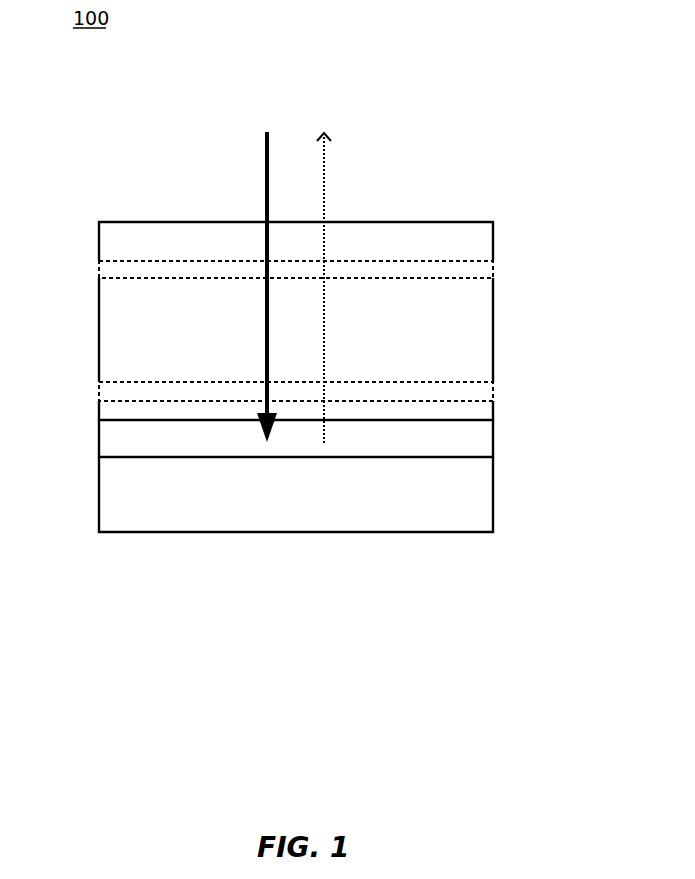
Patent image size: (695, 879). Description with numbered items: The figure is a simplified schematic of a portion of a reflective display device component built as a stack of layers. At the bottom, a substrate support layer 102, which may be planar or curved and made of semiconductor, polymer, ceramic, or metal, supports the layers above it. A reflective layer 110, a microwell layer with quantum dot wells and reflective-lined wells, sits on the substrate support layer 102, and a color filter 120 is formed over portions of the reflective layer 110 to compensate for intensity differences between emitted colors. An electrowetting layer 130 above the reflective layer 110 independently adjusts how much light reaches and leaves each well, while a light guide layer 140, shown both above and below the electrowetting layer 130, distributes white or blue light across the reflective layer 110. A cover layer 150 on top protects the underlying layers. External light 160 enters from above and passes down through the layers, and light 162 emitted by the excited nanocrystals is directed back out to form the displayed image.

The substrate support layer 102 is at (493, 497).
The reflective layer 110 is at (493, 437).
The color filter 120 is at (493, 410).
The electrowetting layer 130 is at (493, 340).
The light guide layer 140 is at (98, 275).
The cover layer 150 is at (493, 243).
The light 160 is at (252, 168).
The light 162 is at (340, 172).